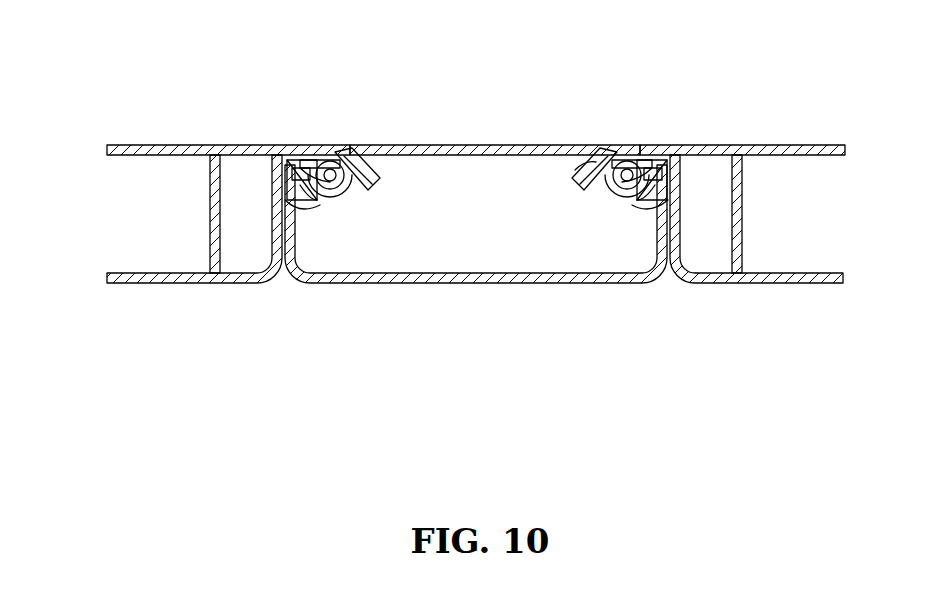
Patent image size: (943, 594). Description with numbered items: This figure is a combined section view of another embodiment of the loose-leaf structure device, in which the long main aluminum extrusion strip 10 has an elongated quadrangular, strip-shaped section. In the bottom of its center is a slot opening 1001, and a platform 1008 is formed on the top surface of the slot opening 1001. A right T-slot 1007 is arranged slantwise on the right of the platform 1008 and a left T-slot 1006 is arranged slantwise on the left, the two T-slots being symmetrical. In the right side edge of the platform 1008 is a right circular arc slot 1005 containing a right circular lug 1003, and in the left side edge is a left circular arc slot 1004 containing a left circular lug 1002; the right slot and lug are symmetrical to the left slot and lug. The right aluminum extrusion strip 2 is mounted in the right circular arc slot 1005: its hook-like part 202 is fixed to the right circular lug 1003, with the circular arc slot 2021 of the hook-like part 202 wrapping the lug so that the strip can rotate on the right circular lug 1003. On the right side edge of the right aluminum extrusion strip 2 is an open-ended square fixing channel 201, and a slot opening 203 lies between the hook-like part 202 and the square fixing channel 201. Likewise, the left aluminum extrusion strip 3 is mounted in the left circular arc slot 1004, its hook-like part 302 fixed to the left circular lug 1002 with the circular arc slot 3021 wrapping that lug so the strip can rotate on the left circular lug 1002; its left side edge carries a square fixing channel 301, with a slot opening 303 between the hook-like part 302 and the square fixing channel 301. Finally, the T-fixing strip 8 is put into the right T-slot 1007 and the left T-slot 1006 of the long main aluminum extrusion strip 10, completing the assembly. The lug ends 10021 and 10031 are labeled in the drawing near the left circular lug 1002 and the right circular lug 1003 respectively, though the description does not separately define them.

The right aluminum extrusion strip 2 is at (754, 189).
The left aluminum extrusion strip 3 is at (221, 153).
The T-fixing strip 8 is at (605, 145).
The long main aluminum extrusion strip 10 is at (409, 207).
The square fixing channel 201 is at (798, 227).
The hook-like part 202 is at (679, 136).
The circular arc slot 2021 is at (660, 145).
The slot opening 203 is at (712, 242).
The square fixing channel 301 is at (160, 222).
The hook-like part 302 is at (333, 134).
The circular arc slot 3021 is at (314, 145).
The slot opening 303 is at (252, 183).
The slot opening 1001 is at (512, 245).
The left circular lug 1002 is at (258, 176).
The first hook end 10021 is at (317, 175).
The right circular lug 1003 is at (610, 211).
The second hook end 10031 is at (620, 195).
The left circular arc slot 1004 is at (307, 188).
The right circular arc slot 1005 is at (648, 245).
The left T-slot 1006 is at (375, 150).
The right T-slot 1007 is at (583, 145).
The platform 1008 is at (505, 145).